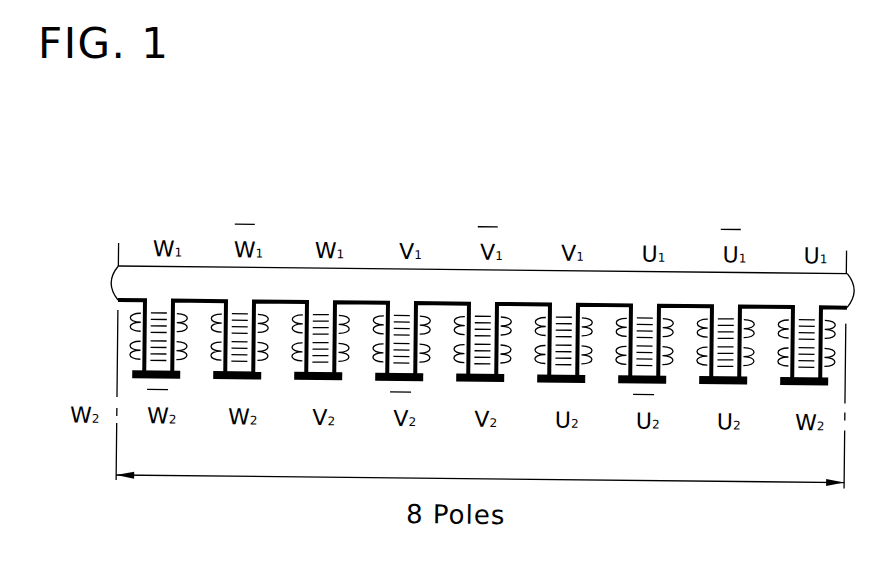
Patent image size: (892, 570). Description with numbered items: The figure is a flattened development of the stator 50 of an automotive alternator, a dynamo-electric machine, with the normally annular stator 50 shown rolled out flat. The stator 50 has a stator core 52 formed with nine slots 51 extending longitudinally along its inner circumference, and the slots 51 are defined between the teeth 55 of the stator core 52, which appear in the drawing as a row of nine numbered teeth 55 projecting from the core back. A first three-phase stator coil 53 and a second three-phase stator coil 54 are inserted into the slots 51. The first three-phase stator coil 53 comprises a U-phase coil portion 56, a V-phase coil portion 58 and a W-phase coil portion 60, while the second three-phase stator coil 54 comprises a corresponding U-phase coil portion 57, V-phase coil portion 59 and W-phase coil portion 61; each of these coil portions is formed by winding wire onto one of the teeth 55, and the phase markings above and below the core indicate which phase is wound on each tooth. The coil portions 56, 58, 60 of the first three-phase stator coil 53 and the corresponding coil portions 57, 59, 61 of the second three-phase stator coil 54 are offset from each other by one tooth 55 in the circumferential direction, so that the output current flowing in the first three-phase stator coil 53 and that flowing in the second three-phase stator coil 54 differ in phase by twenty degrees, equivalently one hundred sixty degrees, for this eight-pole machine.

The stator 50 is at (332, 190).
The slot 51 is at (358, 369).
The stator core 52 is at (515, 281).
The first 3-phase stator coil 53 is at (592, 313).
The second 3-phase stator coil 54 is at (278, 360).
The tooth 55 is at (500, 376).
The U-phase coil portion 56 is at (753, 314).
The U-phase coil portion 57 is at (672, 360).
The V-phase coil portion 58 is at (455, 318).
The V-phase coil portion 59 is at (293, 360).
The W-phase coil portion 60 is at (191, 323).
The W-phase coil portion 61 is at (190, 358).